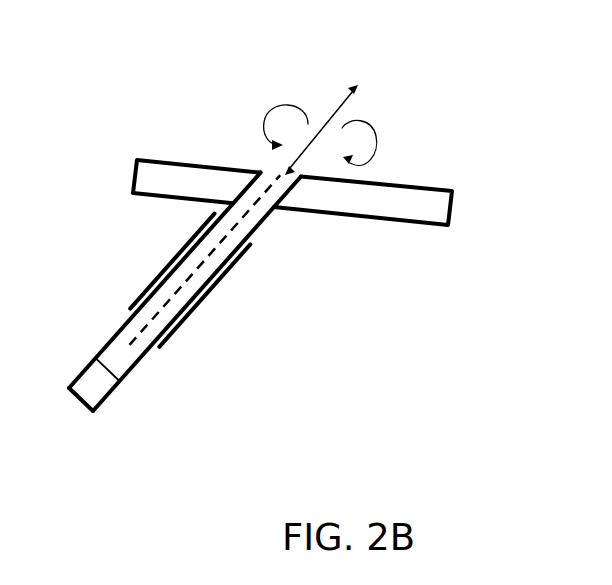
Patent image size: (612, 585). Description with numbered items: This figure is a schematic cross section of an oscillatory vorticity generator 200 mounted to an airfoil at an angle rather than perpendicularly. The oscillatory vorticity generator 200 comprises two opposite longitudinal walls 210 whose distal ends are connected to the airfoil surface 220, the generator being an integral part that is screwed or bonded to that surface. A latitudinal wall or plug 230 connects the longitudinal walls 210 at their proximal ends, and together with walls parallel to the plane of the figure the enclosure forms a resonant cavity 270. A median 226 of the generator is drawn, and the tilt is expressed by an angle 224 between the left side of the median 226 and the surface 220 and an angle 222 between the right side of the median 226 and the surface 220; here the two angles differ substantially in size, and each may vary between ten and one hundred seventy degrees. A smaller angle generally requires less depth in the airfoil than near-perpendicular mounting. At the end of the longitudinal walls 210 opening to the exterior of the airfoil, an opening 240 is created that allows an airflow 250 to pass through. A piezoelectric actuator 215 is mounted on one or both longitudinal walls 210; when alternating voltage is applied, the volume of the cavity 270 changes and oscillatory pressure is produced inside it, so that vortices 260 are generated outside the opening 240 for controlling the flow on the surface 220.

The oscillatory vorticity generator 200 is at (456, 302).
The longitudinal walls 210 is at (138, 362).
The piezoelectric actuator 215 is at (208, 288).
The airfoil surface 220 is at (428, 186).
The angle between right side of median and surface 222 is at (265, 219).
The angle between left side of median and surface 224 is at (240, 224).
The median 226 is at (245, 254).
The latitudinal wall or plug 230 is at (117, 358).
The opening 240 is at (266, 182).
The airflow 250 is at (345, 99).
The vortices 260 is at (378, 139).
The resonant cavity 270 is at (124, 328).